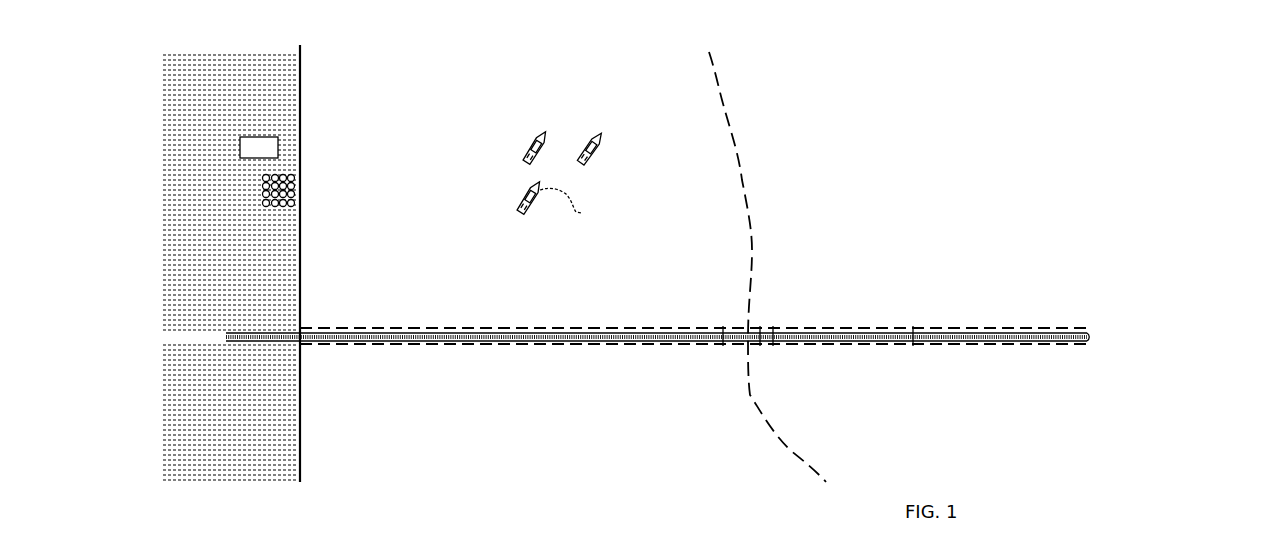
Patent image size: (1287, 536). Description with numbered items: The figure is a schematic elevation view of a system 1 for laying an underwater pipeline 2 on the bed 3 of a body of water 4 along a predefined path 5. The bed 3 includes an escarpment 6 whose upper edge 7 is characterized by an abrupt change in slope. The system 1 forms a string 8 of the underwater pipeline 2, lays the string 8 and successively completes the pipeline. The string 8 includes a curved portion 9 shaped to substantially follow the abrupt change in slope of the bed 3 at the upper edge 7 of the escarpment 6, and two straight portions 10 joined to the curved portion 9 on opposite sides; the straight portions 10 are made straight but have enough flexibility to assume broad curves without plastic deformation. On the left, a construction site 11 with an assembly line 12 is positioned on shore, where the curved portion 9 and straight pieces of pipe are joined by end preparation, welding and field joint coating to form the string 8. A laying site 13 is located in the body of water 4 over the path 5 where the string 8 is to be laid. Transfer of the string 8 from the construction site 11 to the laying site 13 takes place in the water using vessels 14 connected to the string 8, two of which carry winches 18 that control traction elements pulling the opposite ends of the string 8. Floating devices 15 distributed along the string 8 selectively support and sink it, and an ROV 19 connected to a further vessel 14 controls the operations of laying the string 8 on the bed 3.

The system 1 is at (893, 215).
The underwater pipeline 2 is at (1058, 343).
The bed 3 is at (968, 296).
The body of water 4 is at (1093, 465).
The predefined path 5 is at (900, 325).
The escarpment 6 is at (768, 262).
The upper edge 7 is at (756, 240).
The string 8 is at (792, 347).
The curved portion 9 is at (760, 333).
The straight portions 10 is at (638, 331).
The construction site 11 is at (447, 185).
The assembly line 12 is at (240, 150).
The laying site 13 is at (877, 318).
The vessels 14 is at (525, 136).
The floating devices 15 is at (262, 178).
The winches 18 is at (524, 158).
The ROV 19 is at (573, 206).